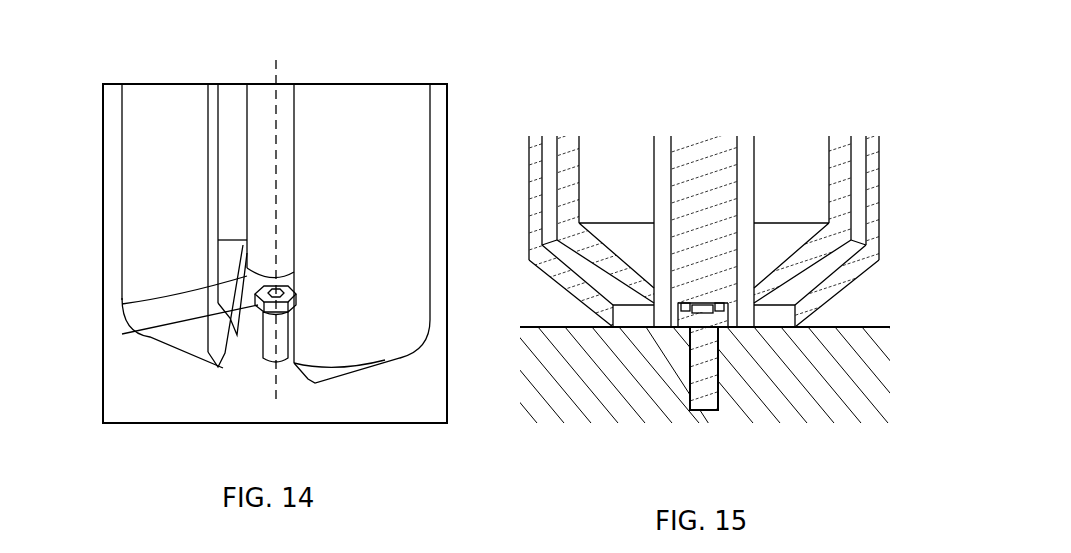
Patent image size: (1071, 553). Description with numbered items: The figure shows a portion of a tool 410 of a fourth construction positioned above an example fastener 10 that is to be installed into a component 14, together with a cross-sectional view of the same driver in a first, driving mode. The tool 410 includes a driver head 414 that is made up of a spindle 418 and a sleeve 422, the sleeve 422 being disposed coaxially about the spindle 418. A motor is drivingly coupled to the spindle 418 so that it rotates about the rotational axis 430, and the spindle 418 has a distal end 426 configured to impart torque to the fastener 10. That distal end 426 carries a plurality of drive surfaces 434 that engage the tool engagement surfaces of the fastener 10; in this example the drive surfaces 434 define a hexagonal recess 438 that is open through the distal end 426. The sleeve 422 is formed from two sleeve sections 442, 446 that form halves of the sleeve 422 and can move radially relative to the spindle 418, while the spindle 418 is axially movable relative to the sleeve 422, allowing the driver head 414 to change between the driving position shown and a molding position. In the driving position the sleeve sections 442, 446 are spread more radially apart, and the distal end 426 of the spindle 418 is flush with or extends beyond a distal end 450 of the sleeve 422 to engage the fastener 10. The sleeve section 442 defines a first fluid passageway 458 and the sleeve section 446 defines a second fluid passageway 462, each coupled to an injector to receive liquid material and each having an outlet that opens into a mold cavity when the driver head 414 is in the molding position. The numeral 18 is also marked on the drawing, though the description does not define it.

In FIG. 14, the fastener 10 is at (256, 360).
In FIG. 15, the fastener 10 is at (703, 378).
In FIG. 14, the component 14 is at (120, 393).
In FIG. 15, the component 14 is at (873, 325).
In FIG. 14, the fastener bore 18 is at (122, 335).
In FIG. 15, the fastener bore 18 is at (718, 330).
In FIG. 14, the tool 410 is at (140, 52).
In FIG. 14, the driver head 414 is at (115, 109).
In FIG. 14, the spindle 418 is at (233, 95).
In FIG. 15, the spindle 418 is at (690, 138).
In FIG. 14, the sleeve 422 is at (148, 215).
In FIG. 15, the sleeve 422 is at (539, 213).
In FIG. 14, the distal end of the spindle 426 is at (122, 305).
In FIG. 15, the distal end of the spindle 426 is at (740, 333).
In FIG. 14, the rotational axis 430 is at (278, 67).
In FIG. 15, the drive surfaces 434 is at (728, 312).
In FIG. 15, the hexagonal recess 438 is at (704, 298).
In FIG. 14, the sleeve section 442 is at (175, 95).
In FIG. 15, the sleeve section 442 is at (622, 145).
In FIG. 14, the sleeve section 446 is at (385, 98).
In FIG. 15, the sleeve section 446 is at (787, 143).
In FIG. 15, the distal end of the sleeve 450 is at (622, 322).
In FIG. 15, the first fluid passageway 458 is at (547, 179).
In FIG. 15, the second fluid passageway 462 is at (860, 172).